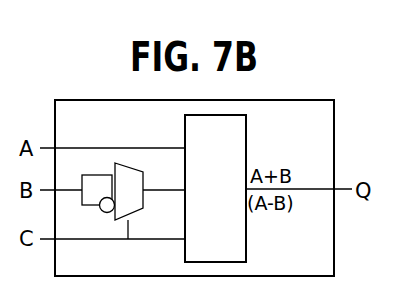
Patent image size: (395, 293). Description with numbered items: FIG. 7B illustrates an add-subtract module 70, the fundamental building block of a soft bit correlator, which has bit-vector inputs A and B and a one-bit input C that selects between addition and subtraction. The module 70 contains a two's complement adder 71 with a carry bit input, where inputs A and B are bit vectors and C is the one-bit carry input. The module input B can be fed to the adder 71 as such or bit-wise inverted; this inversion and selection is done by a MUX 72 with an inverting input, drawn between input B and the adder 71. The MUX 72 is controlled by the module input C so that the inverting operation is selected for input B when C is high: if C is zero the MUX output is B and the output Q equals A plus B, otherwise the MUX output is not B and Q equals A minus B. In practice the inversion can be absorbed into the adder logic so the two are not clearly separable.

The module 70 is at (300, 100).
The adder 71 is at (246, 131).
The MUX (multiplexer) 72 is at (128, 162).